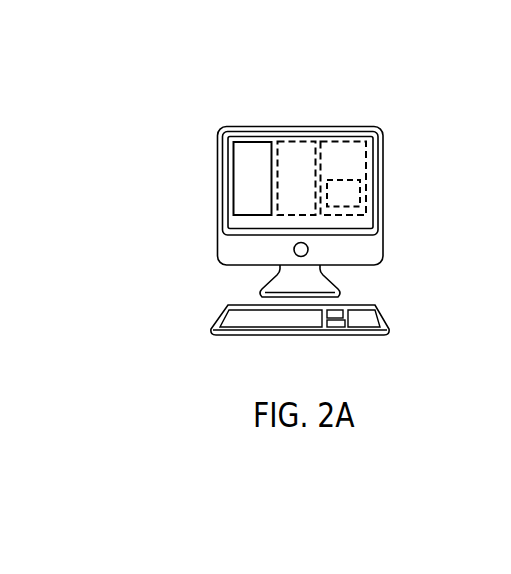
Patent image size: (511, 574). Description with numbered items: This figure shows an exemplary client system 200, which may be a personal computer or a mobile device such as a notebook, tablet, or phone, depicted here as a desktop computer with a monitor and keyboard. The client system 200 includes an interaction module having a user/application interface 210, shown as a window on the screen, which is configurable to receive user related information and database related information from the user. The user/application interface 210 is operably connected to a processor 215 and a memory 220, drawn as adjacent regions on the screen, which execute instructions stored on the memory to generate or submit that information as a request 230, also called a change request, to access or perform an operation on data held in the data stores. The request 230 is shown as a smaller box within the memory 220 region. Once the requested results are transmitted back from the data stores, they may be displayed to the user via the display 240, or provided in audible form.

The client system 200 is at (176, 100).
The user/application interface 210 is at (255, 162).
The processor 215 is at (295, 153).
The memory 220 is at (355, 153).
The request 230 is at (347, 195).
The display 240 is at (218, 207).